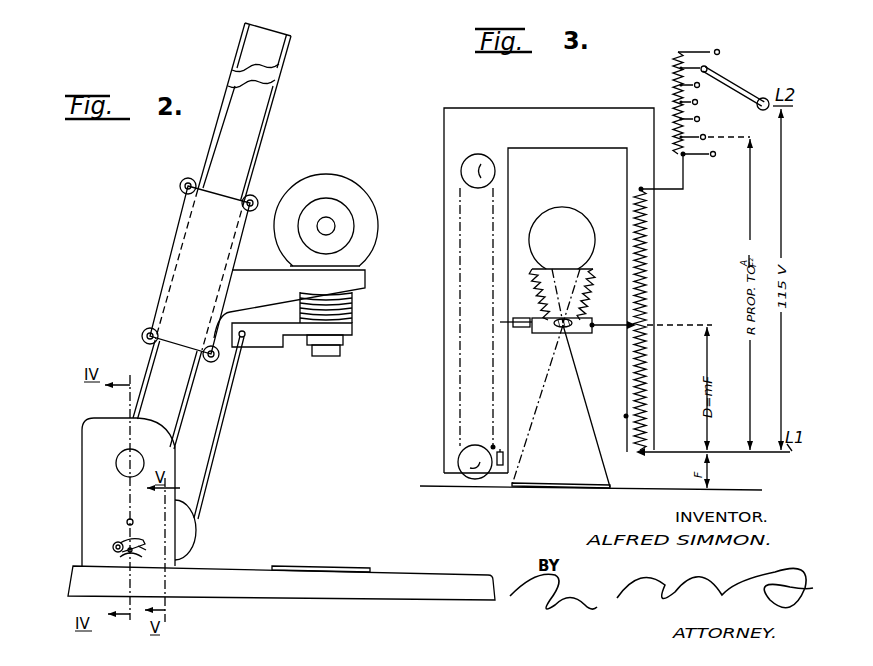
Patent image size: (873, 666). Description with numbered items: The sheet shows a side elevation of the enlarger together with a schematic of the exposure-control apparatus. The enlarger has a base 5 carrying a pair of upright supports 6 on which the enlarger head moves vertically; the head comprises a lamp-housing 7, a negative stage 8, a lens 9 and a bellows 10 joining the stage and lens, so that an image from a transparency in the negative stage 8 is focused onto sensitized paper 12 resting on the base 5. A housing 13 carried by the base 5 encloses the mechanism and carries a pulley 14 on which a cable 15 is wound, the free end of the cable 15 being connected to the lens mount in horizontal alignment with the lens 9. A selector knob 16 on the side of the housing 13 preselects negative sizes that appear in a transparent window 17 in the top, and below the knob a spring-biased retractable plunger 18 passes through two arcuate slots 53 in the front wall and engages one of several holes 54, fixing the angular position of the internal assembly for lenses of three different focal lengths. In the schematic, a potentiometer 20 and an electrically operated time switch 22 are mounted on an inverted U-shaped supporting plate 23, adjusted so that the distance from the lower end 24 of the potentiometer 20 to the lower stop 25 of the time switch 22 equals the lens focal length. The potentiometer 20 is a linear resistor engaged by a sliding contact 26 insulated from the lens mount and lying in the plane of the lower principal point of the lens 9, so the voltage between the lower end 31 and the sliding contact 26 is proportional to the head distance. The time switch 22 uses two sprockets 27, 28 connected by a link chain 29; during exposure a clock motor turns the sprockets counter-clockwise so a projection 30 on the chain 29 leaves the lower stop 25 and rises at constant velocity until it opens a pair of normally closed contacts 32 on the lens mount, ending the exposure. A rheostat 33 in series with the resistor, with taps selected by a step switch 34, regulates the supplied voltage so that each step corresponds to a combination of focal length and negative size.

In FIG. 2, the base 5 is at (407, 578).
In FIG. 2, the upright supports 6 is at (257, 112).
In FIG. 2, the lamp-housing 7 is at (340, 176).
In FIG. 3, the lamp-housing 7 is at (577, 210).
In FIG. 2, the negative stage 8 is at (367, 272).
In FIG. 3, the negative stage 8 is at (565, 268).
In FIG. 2, the lens 9 is at (348, 348).
In FIG. 3, the lens 9 is at (582, 311).
In FIG. 3, the bellows 10 is at (588, 293).
In FIG. 2, the sensitized paper 12 is at (327, 567).
In FIG. 3, the sensitized paper 12 is at (548, 487).
In FIG. 2, the housing 13 is at (82, 481).
In FIG. 2, the pulley 14 is at (190, 541).
In FIG. 2, the cable 15 is at (224, 428).
In FIG. 2, the selector knob 16 is at (118, 452).
In FIG. 2, the transparent window 17 is at (157, 425).
In FIG. 2, the spring-biased retractable plunger 18 is at (113, 547).
In FIG. 3, the potentiometer 20 is at (648, 267).
In FIG. 3, the electrically operated time switch 22 is at (436, 404).
In FIG. 3, the inverted U-shaped supporting plate 23 is at (521, 108).
In FIG. 3, the lower end of potentiometer 24 is at (634, 455).
In FIG. 3, the lower stop 25 is at (508, 459).
In FIG. 3, the sliding contact 26 is at (598, 328).
In FIG. 3, the sprocket 27 is at (470, 171).
In FIG. 3, the sprocket 28 is at (457, 456).
In FIG. 3, the link chain 29 is at (458, 360).
In FIG. 3, the projection 30 is at (500, 445).
In FIG. 3, the lower end of resistor 31 is at (624, 415).
In FIG. 3, the normally closed contacts 32 is at (523, 317).
In FIG. 3, the rheostat 33 is at (672, 80).
In FIG. 3, the step switch 34 is at (738, 87).
In FIG. 2, the arcuate slots 53 is at (130, 530).
In FIG. 2, the holes 54 is at (140, 547).